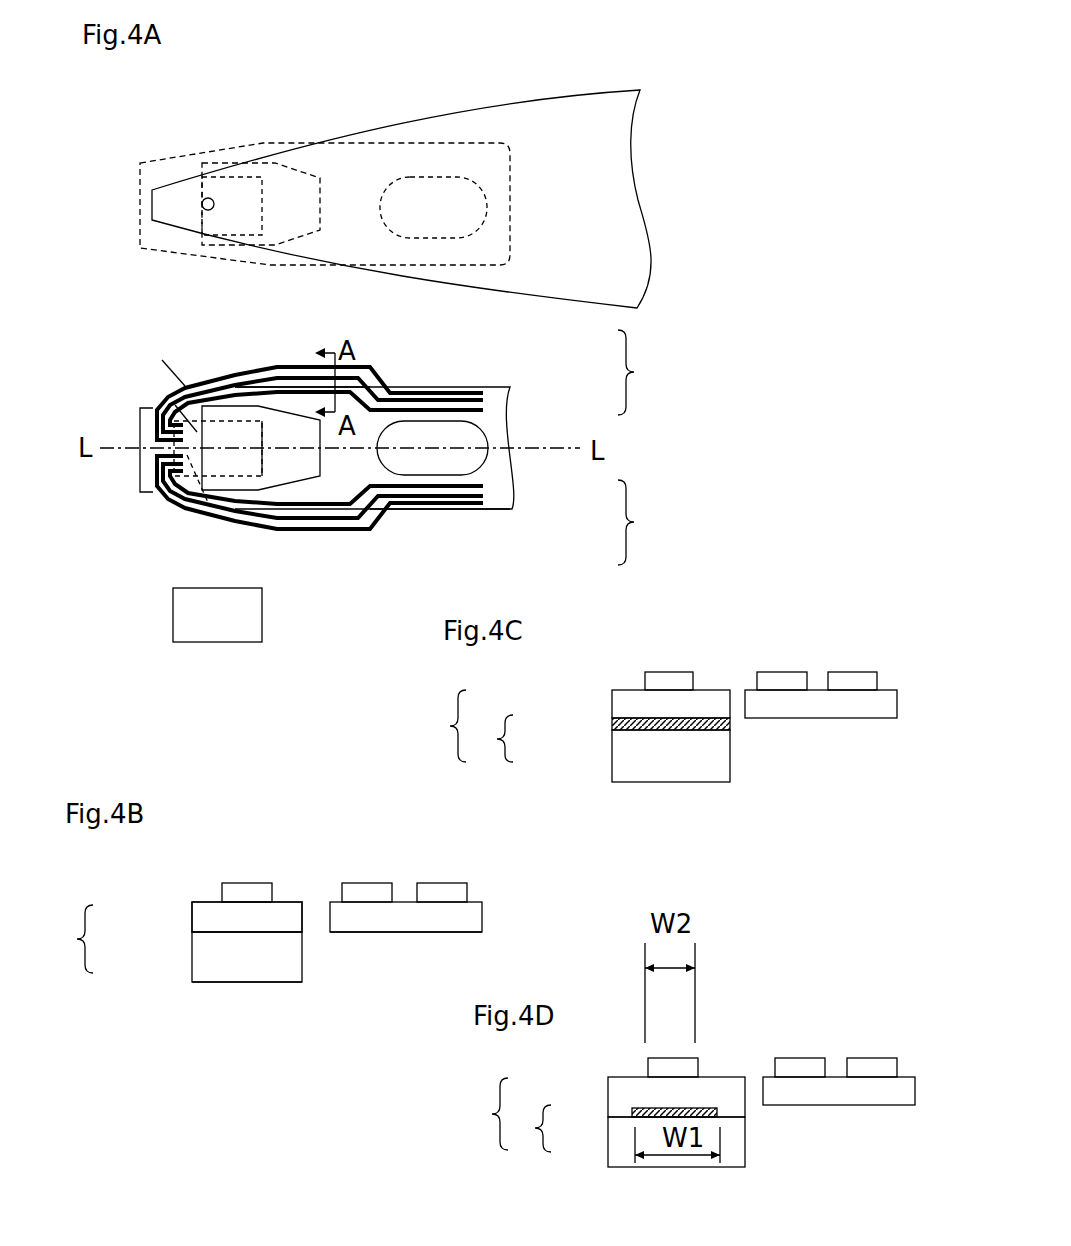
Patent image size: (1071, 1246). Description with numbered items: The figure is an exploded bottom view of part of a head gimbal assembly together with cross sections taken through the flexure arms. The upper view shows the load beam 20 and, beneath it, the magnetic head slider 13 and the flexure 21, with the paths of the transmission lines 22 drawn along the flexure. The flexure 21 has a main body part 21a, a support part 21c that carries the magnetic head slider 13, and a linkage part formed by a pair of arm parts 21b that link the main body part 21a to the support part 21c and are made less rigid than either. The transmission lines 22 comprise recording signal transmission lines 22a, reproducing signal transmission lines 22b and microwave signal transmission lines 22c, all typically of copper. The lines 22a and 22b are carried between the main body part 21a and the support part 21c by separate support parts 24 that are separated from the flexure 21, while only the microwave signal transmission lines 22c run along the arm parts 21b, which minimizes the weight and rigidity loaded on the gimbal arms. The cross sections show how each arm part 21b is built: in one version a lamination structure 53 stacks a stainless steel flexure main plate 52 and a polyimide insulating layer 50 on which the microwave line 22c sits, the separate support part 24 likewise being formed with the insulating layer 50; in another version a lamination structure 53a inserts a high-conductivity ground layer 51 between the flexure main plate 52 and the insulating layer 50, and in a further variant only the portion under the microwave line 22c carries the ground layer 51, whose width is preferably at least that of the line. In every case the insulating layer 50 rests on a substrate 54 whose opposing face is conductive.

In FIG. 4A, the magnetic head slider 13 is at (210, 505).
In FIG. 4A, the load beam 20 is at (600, 98).
In FIG. 4A, the flexure 21 is at (298, 148).
In FIG. 4A, the main body part 21a is at (373, 483).
In FIG. 4A, the arm part 21b is at (300, 403).
In FIG. 4B, the arm part 21b is at (247, 1006).
In FIG. 4A, the support part 21c is at (167, 382).
In FIG. 4A, the transmission lines 22 is at (646, 447).
In FIG. 4A, the recording signal transmission line 22a is at (453, 393).
In FIG. 4C, the recording signal transmission line 22a is at (846, 670).
In FIG. 4B, the recording signal transmission line 22a is at (435, 882).
In FIG. 4D, the recording signal transmission line 22a is at (867, 1057).
In FIG. 4A, the reproducing signal transmission line 22b is at (465, 402).
In FIG. 4C, the reproducing signal transmission line 22b is at (776, 670).
In FIG. 4B, the reproducing signal transmission line 22b is at (363, 882).
In FIG. 4D, the reproducing signal transmission line 22b is at (795, 1057).
In FIG. 4A, the microwave signal transmission line 22c is at (478, 411).
In FIG. 4C, the microwave signal transmission line 22c is at (662, 670).
In FIG. 4B, the microwave signal transmission line 22c is at (243, 882).
In FIG. 4D, the microwave signal transmission line 22c is at (666, 1057).
In FIG. 4A, the separate support part 24 is at (240, 380).
In FIG. 4B, the separate support part 24 is at (386, 1006).
In FIG. 4C, the insulating layer 50 is at (612, 697).
In FIG. 4B, the insulating layer 50 is at (228, 912).
In FIG. 4D, the insulating layer 50 is at (608, 1082).
In FIG. 4C, the ground layer 51 is at (612, 724).
In FIG. 4D, the ground layer 51 is at (612, 1110).
In FIG. 4C, the flexure main plate 52 is at (612, 757).
In FIG. 4B, the flexure main plate 52 is at (200, 953).
In FIG. 4D, the flexure main plate 52 is at (615, 1138).
In FIG. 4B, the lamination structure 53 is at (71, 939).
In FIG. 4C, the lamination structure 53a is at (431, 726).
In FIG. 4D, the lamination structure 53a is at (476, 1114).
In FIG. 4C, the substrate 54 is at (492, 738).
In FIG. 4B, the substrate 54 is at (247, 917).
In FIG. 4D, the substrate 54 is at (529, 1128).